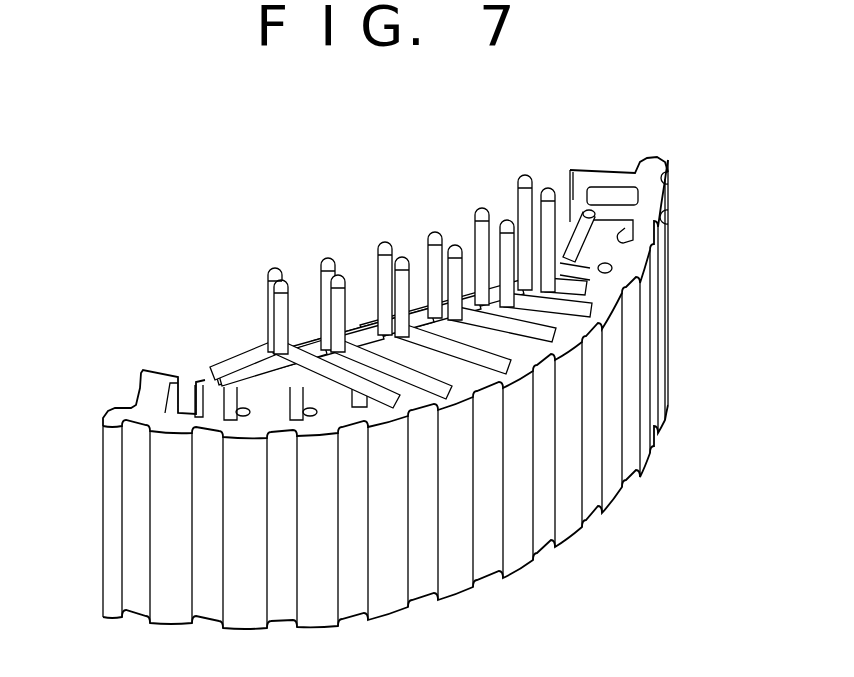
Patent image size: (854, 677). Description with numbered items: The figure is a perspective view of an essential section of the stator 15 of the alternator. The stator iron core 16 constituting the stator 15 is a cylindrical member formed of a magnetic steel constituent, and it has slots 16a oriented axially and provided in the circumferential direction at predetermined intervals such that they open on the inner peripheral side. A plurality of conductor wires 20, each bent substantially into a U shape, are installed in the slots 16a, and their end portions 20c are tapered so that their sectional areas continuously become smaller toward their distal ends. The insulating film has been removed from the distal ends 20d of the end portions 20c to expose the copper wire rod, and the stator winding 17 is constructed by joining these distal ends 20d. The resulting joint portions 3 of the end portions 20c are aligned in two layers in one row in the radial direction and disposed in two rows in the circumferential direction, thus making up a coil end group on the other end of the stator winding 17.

The stator 15 is at (140, 238).
The stator iron core 16 is at (684, 284).
The slots 16a is at (650, 215).
The stator winding 17 is at (240, 296).
The conductor wire 20 is at (314, 265).
The end portions 20c is at (505, 178).
The distal ends 20d is at (476, 210).
The joint portions 3 is at (522, 180).